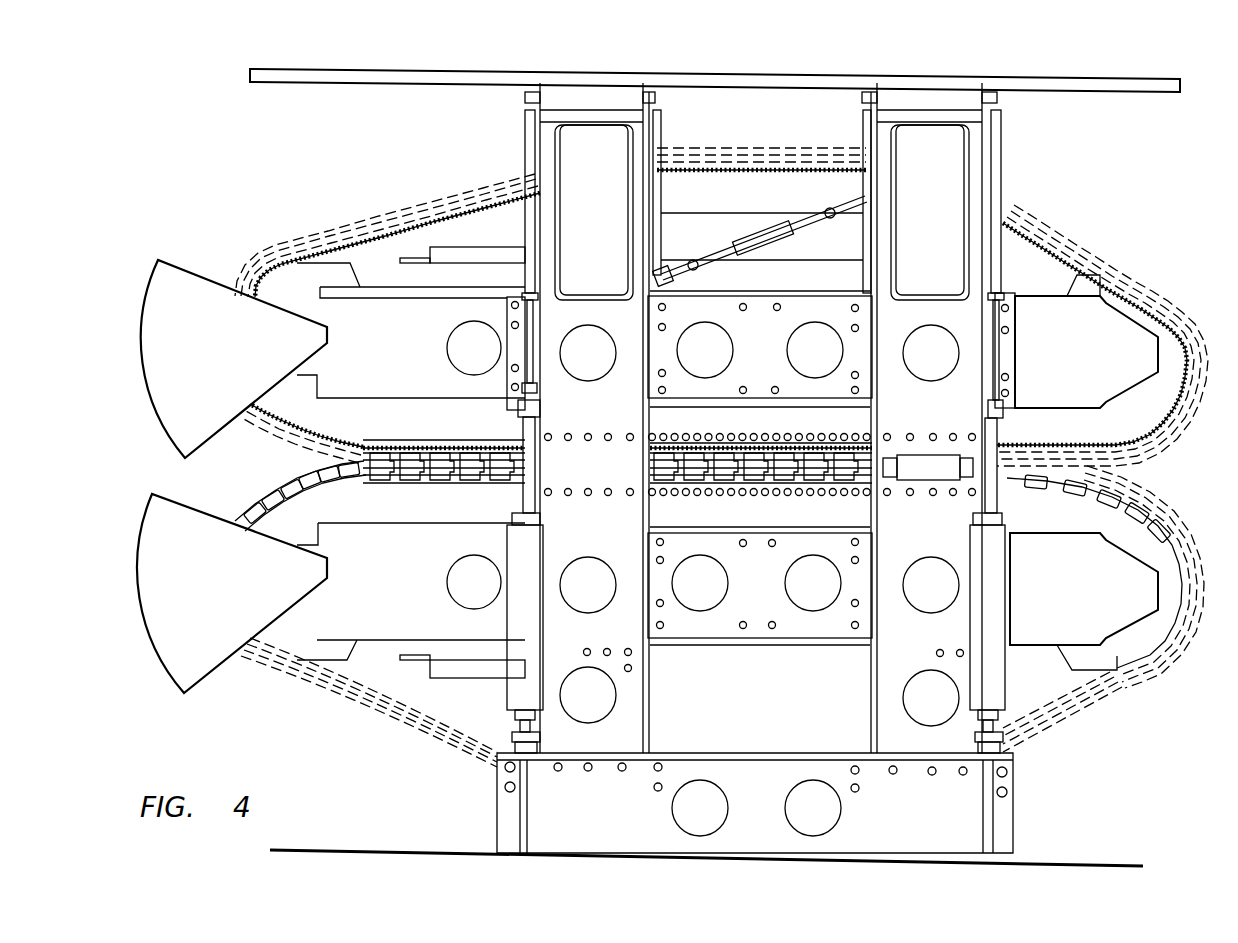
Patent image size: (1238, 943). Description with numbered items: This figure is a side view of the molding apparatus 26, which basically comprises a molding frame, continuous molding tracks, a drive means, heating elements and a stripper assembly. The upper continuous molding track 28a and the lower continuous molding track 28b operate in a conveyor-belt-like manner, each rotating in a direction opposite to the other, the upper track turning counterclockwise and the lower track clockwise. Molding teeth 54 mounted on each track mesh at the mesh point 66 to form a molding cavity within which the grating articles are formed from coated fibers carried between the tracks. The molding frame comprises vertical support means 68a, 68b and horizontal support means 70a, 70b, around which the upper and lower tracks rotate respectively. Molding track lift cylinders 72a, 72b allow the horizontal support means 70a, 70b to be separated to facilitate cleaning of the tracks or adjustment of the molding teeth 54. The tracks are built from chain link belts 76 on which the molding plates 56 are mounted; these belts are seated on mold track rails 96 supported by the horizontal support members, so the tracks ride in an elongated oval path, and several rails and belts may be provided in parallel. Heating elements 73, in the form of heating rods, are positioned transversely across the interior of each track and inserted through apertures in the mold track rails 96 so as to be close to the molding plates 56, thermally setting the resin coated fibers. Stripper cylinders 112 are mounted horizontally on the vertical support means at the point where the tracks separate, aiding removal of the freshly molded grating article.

The molding apparatus 26 is at (1067, 138).
The upper continuous molding track 28a is at (370, 240).
The lower continuous molding track 28b is at (358, 710).
The molding teeth 54 is at (293, 483).
The molding plates 56 is at (297, 500).
The mesh point 66 is at (378, 468).
The vertical support means 68a is at (606, 409).
The vertical support means 68b is at (945, 409).
The horizontal support means 70a is at (775, 341).
The horizontal support means 70b is at (774, 590).
The molding track lift cylinder 72a is at (541, 612).
The molding track lift cylinder 72b is at (1003, 592).
The heating elements 73 is at (822, 494).
The chain link belts 76 is at (361, 441).
The mold track rails 96 is at (491, 424).
The stripper cylinders 112 is at (936, 474).